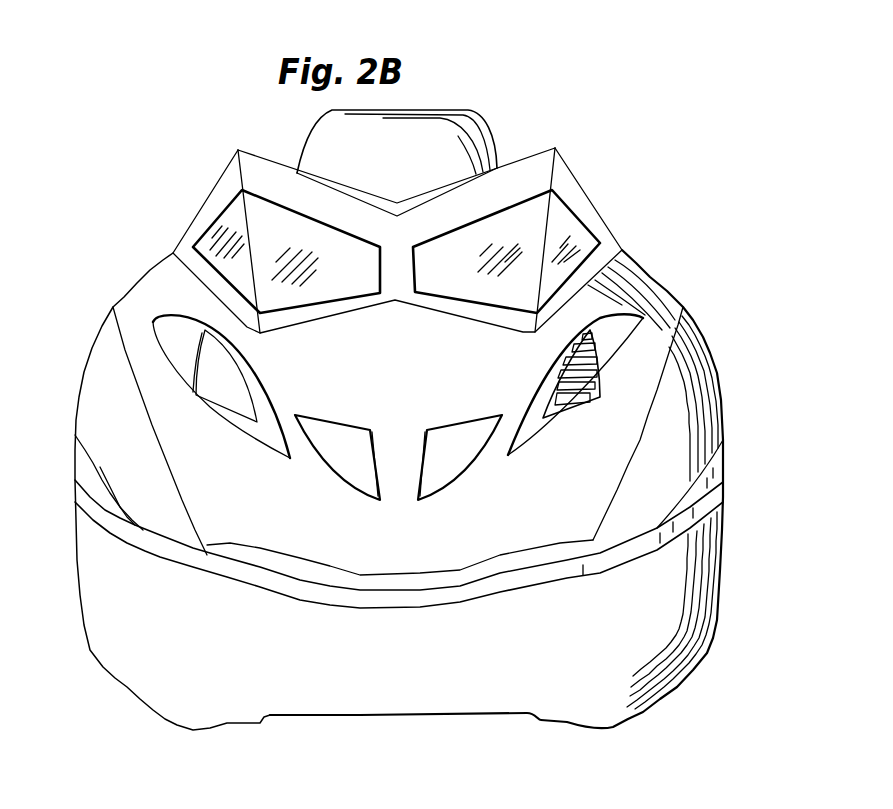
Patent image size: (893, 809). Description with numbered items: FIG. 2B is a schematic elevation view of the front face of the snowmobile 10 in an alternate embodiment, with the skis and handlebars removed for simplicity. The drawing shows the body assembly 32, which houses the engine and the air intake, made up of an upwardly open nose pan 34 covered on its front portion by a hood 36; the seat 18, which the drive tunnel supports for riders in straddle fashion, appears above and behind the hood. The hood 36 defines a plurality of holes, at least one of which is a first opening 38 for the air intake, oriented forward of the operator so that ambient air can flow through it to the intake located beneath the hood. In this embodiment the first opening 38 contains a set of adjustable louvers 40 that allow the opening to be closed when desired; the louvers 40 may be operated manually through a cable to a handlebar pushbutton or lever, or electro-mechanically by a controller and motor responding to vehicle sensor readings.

The snowmobile 10 is at (122, 207).
The seat 18 is at (438, 108).
The body assembly 32 is at (702, 300).
The nose pan 34 is at (722, 572).
The hood 36 is at (705, 382).
The first opening 38 is at (597, 403).
The adjustable louvers 40 is at (600, 368).